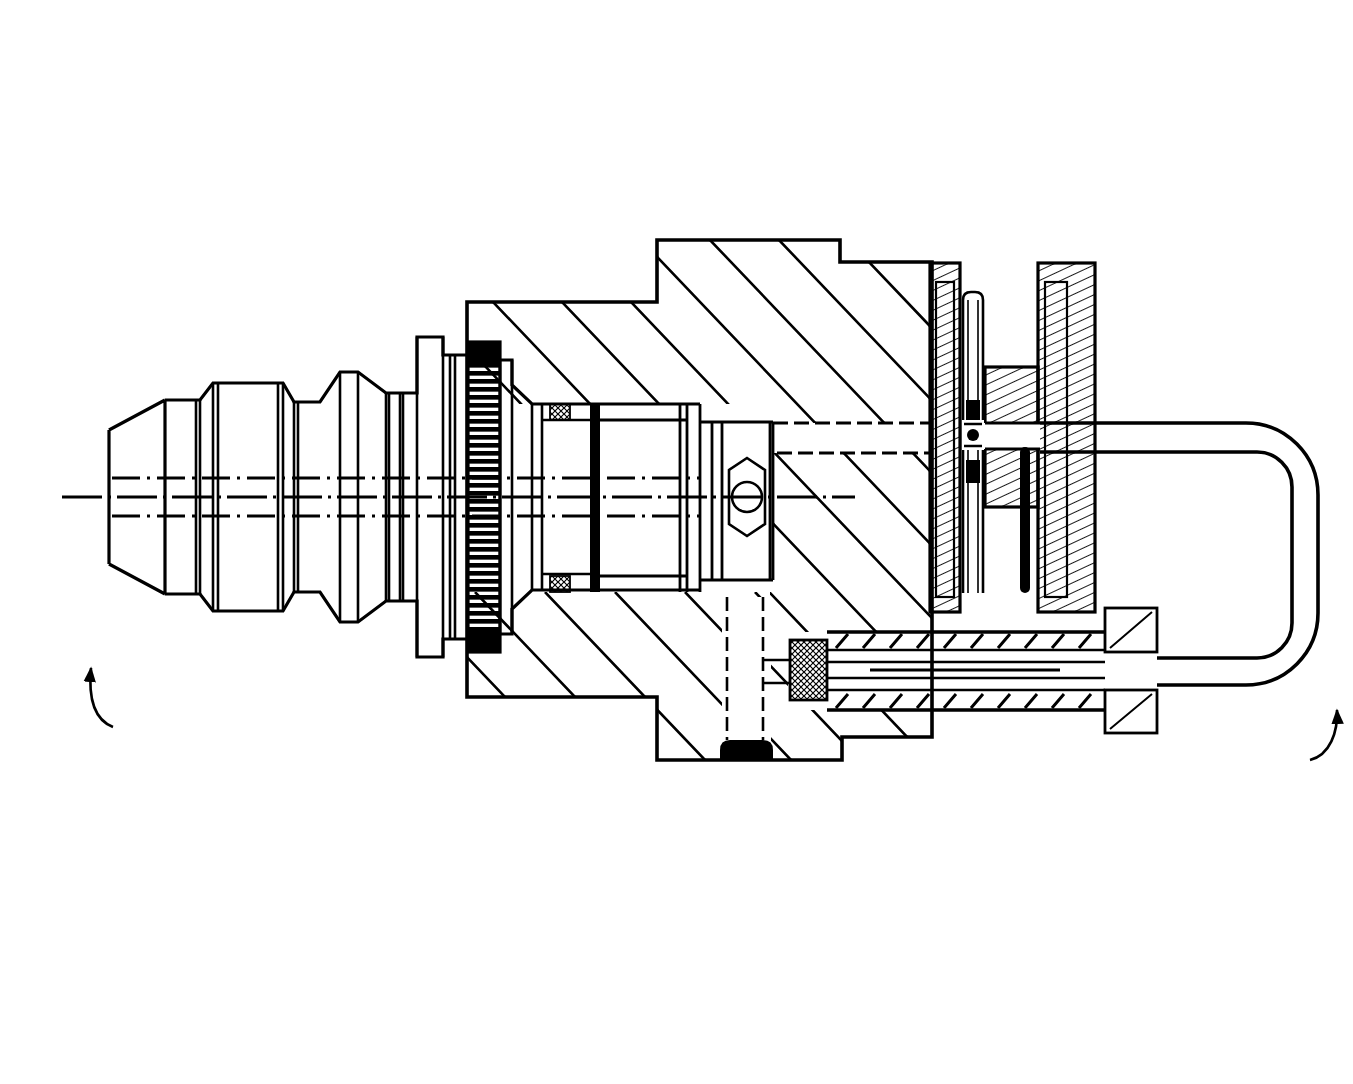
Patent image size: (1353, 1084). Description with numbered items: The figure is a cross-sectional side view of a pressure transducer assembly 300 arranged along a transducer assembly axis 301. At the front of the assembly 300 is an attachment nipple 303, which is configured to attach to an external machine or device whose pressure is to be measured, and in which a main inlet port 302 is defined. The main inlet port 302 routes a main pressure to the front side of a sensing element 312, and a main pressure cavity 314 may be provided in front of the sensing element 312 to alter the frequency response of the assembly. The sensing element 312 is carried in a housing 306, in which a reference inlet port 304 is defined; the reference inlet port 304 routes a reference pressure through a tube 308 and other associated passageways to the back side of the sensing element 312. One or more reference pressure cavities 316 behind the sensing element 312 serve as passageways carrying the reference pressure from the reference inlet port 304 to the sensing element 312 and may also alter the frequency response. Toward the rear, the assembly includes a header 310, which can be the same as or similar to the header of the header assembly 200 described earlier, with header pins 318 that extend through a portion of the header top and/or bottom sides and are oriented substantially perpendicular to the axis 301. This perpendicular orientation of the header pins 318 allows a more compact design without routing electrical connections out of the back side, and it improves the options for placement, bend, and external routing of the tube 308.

The pressure transducer assembly 300 is at (686, 97).
The transducer assembly axis 301 is at (92, 500).
The main inlet port 302 is at (94, 477).
The attachment nipple 303 is at (237, 588).
The reference inlet port 304 is at (741, 773).
The housing 306 is at (545, 675).
The tube 308 is at (1186, 432).
The header 310 is at (1045, 477).
The sensing element 312 is at (950, 433).
The main pressure cavity 314 is at (940, 430).
The reference pressure cavities 316 is at (1000, 441).
The header pins 318 is at (972, 292).
The header assembly 200 is at (998, 461).